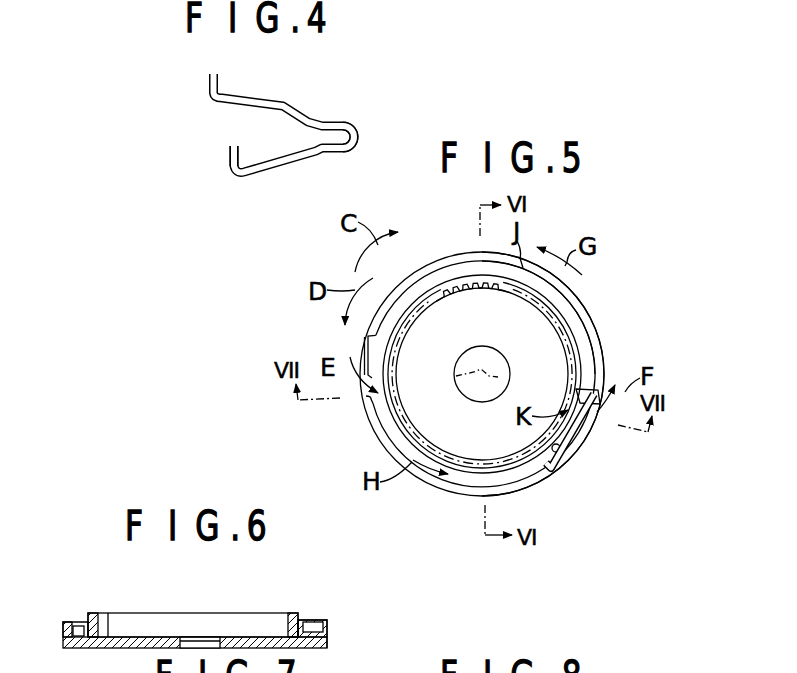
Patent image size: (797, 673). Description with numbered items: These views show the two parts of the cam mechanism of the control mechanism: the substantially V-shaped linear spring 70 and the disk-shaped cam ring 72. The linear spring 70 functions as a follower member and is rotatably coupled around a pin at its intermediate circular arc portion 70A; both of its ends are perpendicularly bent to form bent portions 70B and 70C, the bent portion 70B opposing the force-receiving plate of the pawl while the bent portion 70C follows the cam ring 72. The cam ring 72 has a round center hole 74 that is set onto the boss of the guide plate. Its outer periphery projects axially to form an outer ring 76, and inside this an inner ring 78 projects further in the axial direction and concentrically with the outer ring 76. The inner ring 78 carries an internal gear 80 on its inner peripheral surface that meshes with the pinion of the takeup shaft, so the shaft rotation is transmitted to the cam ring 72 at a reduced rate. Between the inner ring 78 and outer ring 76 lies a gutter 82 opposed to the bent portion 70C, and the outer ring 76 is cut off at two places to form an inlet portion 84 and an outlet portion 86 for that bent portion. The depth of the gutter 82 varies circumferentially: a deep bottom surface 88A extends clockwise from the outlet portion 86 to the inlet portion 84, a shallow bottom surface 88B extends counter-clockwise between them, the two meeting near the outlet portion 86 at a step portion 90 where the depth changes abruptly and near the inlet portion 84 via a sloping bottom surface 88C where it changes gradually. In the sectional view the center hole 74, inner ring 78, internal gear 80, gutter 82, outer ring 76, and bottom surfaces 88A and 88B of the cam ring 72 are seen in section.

In FIG. 4, the linear spring 70 is at (287, 163).
In FIG. 4, the intermediate circular arc portion 70A is at (358, 126).
In FIG. 4, the bent portion 70B is at (209, 80).
In FIG. 4, the bent portion 70C is at (229, 160).
In FIG. 5, the bent portion 70C is at (566, 466).
In FIG. 5, the cam ring 72 is at (421, 481).
In FIG. 6, the cam ring 72 is at (139, 649).
In FIG. 5, the round center hole 74 is at (456, 374).
In FIG. 6, the round center hole 74 is at (200, 637).
In FIG. 5, the outer ring 76 is at (453, 487).
In FIG. 6, the outer ring 76 is at (330, 626).
In FIG. 5, the inner ring 78 is at (460, 459).
In FIG. 6, the inner ring 78 is at (295, 613).
In FIG. 5, the internal gear 80 is at (434, 299).
In FIG. 6, the internal gear 80 is at (108, 613).
In FIG. 5, the gutter 82 is at (388, 433).
In FIG. 6, the gutter 82 is at (78, 612).
In FIG. 5, the inlet portion 84 is at (370, 396).
In FIG. 5, the outlet portion 86 is at (598, 420).
In FIG. 5, the deep bottom surface 88A is at (533, 473).
In FIG. 6, the deep bottom surface 88A is at (65, 638).
In FIG. 5, the shallow bottom surface 88B is at (589, 333).
In FIG. 6, the shallow bottom surface 88B is at (312, 620).
In FIG. 5, the sloping bottom surface 88C is at (366, 348).
In FIG. 5, the step portion 90 is at (568, 413).